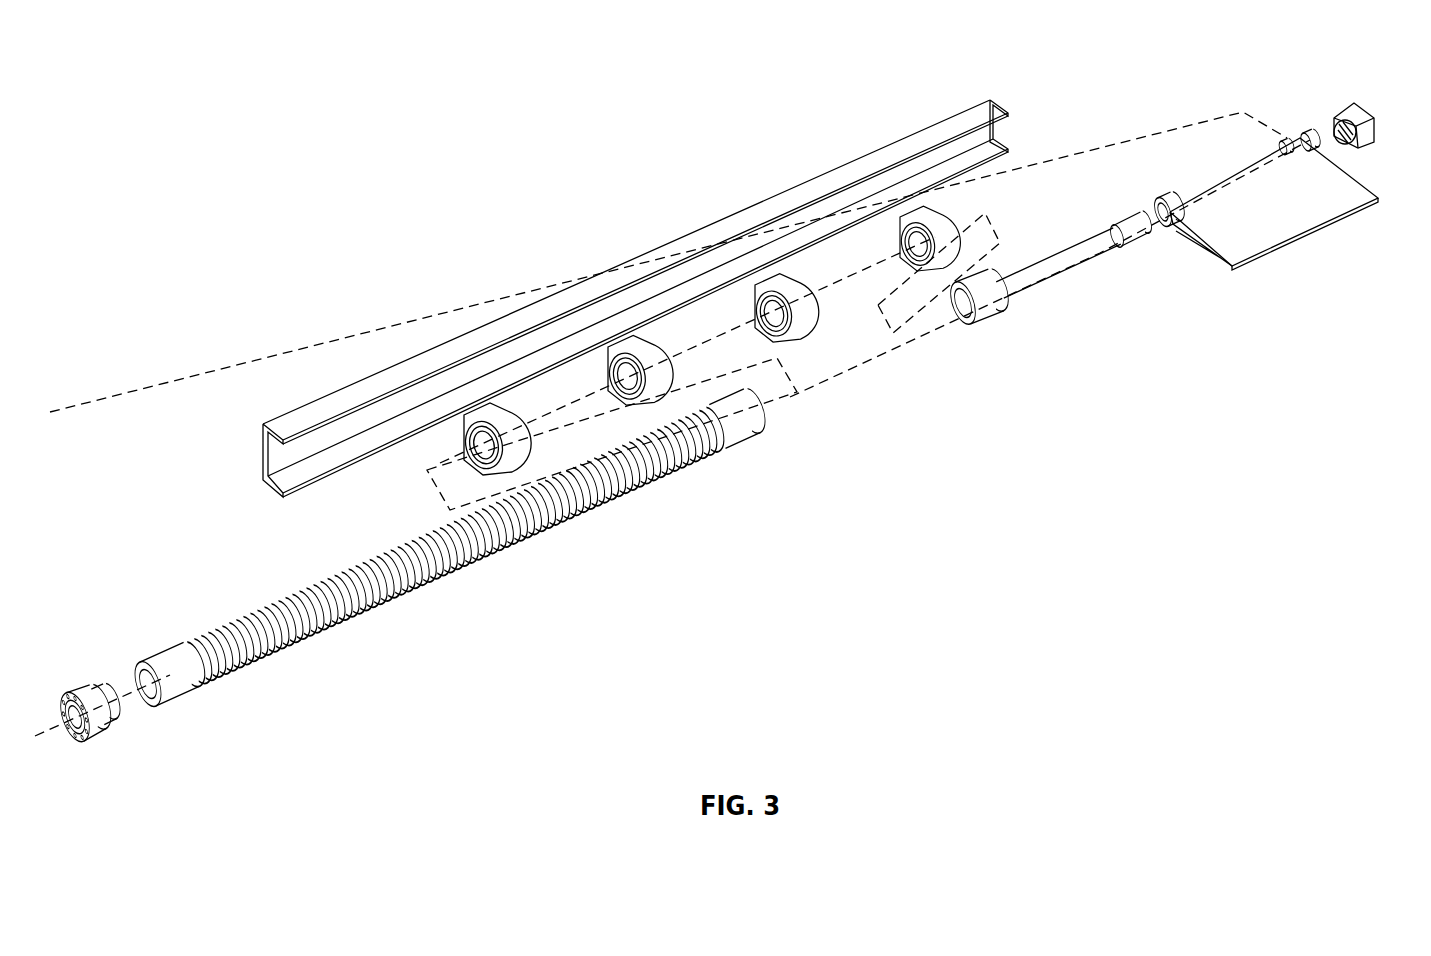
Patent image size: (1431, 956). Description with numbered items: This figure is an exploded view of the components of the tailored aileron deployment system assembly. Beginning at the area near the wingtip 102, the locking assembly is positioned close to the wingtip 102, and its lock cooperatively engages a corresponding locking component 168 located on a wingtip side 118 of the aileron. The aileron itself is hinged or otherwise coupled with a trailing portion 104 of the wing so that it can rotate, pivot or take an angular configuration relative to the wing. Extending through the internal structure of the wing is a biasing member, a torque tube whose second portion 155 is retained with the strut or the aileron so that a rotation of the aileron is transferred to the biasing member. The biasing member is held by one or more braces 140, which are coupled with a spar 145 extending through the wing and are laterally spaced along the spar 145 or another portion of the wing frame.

The wingtip 102 is at (1269, 128).
The trailing portion 104 is at (1187, 207).
The wingtip side 118 is at (1350, 187).
The braces 140 is at (490, 408).
The spar 145 is at (830, 185).
The second portion 155 is at (760, 448).
The locking component 168 is at (1307, 136).